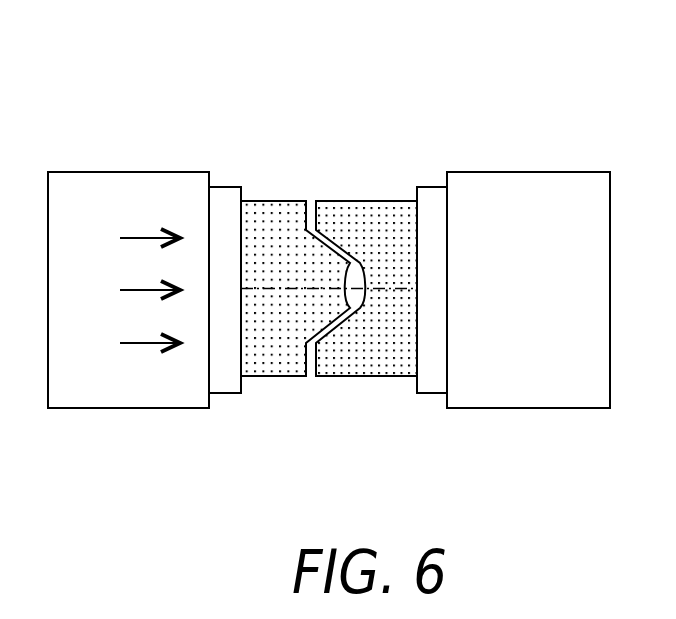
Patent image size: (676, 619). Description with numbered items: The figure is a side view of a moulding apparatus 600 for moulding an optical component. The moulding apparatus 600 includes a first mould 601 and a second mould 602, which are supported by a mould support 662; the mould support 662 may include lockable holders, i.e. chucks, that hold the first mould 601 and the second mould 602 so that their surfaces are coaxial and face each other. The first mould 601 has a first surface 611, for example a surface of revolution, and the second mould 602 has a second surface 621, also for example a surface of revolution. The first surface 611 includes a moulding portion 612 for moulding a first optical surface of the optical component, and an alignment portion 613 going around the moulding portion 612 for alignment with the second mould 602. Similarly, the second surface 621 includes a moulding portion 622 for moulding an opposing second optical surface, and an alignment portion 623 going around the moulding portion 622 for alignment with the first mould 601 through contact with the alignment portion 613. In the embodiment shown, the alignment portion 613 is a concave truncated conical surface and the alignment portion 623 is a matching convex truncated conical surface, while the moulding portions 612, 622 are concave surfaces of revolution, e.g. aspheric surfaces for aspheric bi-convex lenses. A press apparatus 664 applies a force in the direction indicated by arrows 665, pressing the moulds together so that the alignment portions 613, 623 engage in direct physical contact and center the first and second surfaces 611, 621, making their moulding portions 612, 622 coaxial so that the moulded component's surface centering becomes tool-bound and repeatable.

The moulding apparatus 600 is at (546, 115).
The first mould 601 is at (252, 378).
The second mould 602 is at (402, 378).
The first surface 611 is at (280, 246).
The moulding portion 612 is at (347, 297).
The alignment portion 613 is at (338, 237).
The second surface 621 is at (381, 229).
The moulding portion 622 is at (363, 297).
The alignment portion 623 is at (356, 262).
The mould support 662 is at (229, 187).
The press apparatus 664 is at (127, 390).
The arrows 665 is at (138, 234).